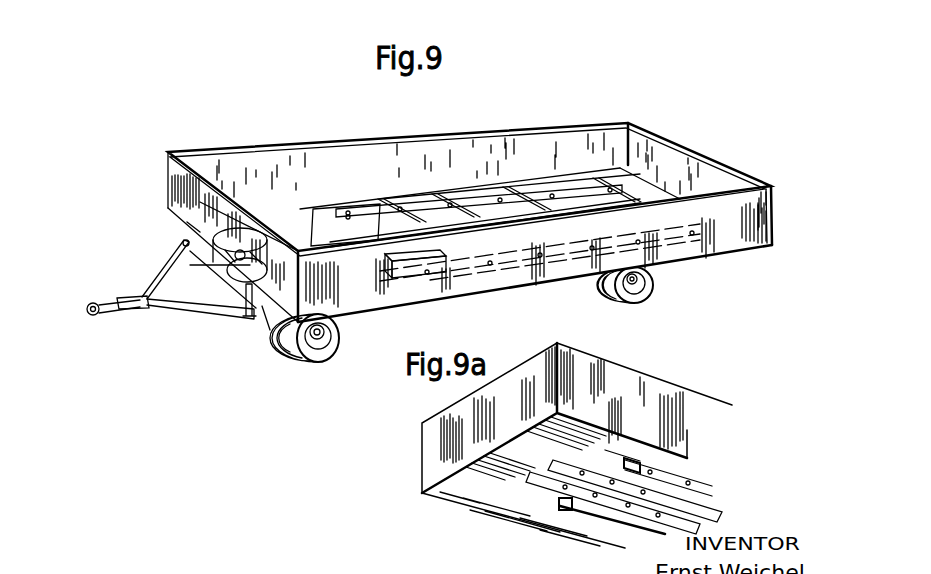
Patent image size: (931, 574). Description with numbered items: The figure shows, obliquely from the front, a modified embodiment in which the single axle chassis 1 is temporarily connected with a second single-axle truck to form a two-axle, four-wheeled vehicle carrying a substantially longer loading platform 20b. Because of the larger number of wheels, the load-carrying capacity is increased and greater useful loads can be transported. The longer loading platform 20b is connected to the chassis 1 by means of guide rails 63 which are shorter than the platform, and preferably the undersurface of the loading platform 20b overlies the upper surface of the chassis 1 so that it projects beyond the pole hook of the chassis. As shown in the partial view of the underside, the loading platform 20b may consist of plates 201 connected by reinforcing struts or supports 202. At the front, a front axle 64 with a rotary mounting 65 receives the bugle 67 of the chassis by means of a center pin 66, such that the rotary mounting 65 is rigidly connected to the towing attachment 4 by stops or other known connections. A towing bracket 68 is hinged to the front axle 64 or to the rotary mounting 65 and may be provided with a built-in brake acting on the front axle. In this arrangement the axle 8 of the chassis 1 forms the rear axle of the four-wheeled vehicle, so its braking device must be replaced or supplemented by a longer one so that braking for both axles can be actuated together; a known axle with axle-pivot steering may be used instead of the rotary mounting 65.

In FIG. 9, the single axle chassis 1 is at (408, 271).
In FIG. 9, the towing attachment 4 is at (318, 243).
In FIG. 9, the axle 8 is at (648, 285).
In FIG. 9, the loading platform 20b is at (675, 143).
In FIG. 9, the guide rails 63 is at (497, 198).
In FIG. 9A, the guide rails 63 is at (560, 503).
In FIG. 9, the front axle 64 is at (319, 362).
In FIG. 9, the rotary mounting 65 is at (270, 330).
In FIG. 9, the center pin 66 is at (261, 228).
In FIG. 9, the bugle 67 is at (280, 268).
In FIG. 9, the towing bracket 68 is at (168, 318).
In FIG. 9, the plates 201 is at (523, 212).
In FIG. 9A, the reinforcing struts 202 is at (618, 502).